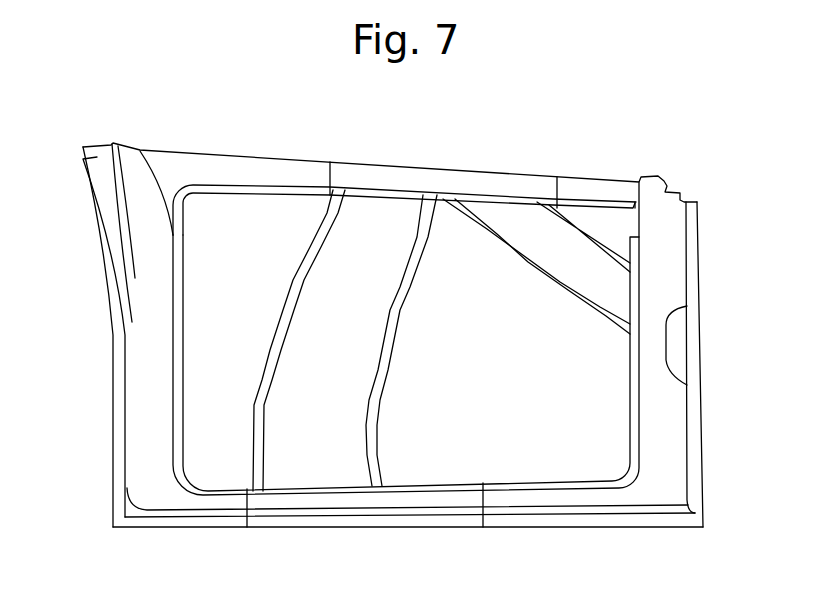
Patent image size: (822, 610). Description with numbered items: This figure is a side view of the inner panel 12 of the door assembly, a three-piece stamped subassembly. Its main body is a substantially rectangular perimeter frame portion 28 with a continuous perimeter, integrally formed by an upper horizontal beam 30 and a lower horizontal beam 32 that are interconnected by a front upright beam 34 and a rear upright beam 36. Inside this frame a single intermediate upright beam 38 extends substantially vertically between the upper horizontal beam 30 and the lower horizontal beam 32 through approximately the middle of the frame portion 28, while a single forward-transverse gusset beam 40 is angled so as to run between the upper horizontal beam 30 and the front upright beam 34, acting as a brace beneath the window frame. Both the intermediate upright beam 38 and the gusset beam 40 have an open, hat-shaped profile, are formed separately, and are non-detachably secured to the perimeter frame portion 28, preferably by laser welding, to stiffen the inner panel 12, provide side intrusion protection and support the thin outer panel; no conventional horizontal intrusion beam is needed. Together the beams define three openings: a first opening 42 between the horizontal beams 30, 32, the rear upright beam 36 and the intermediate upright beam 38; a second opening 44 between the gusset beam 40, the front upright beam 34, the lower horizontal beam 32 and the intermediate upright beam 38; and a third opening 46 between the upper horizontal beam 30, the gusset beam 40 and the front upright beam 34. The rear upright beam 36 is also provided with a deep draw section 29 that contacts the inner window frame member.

The inner panel 12 is at (724, 216).
The perimeter frame portion 28 is at (708, 473).
The deep draw section 29 is at (135, 183).
The upper horizontal beam 30 is at (277, 150).
The lower horizontal beam 32 is at (600, 525).
The front upright beam 34 is at (683, 415).
The rear upright beam 36 is at (125, 468).
The intermediate upright beam 38 is at (390, 379).
The gusset beam 40 is at (512, 278).
The first opening 42 is at (249, 280).
The second opening 44 is at (550, 420).
The third opening 46 is at (610, 228).